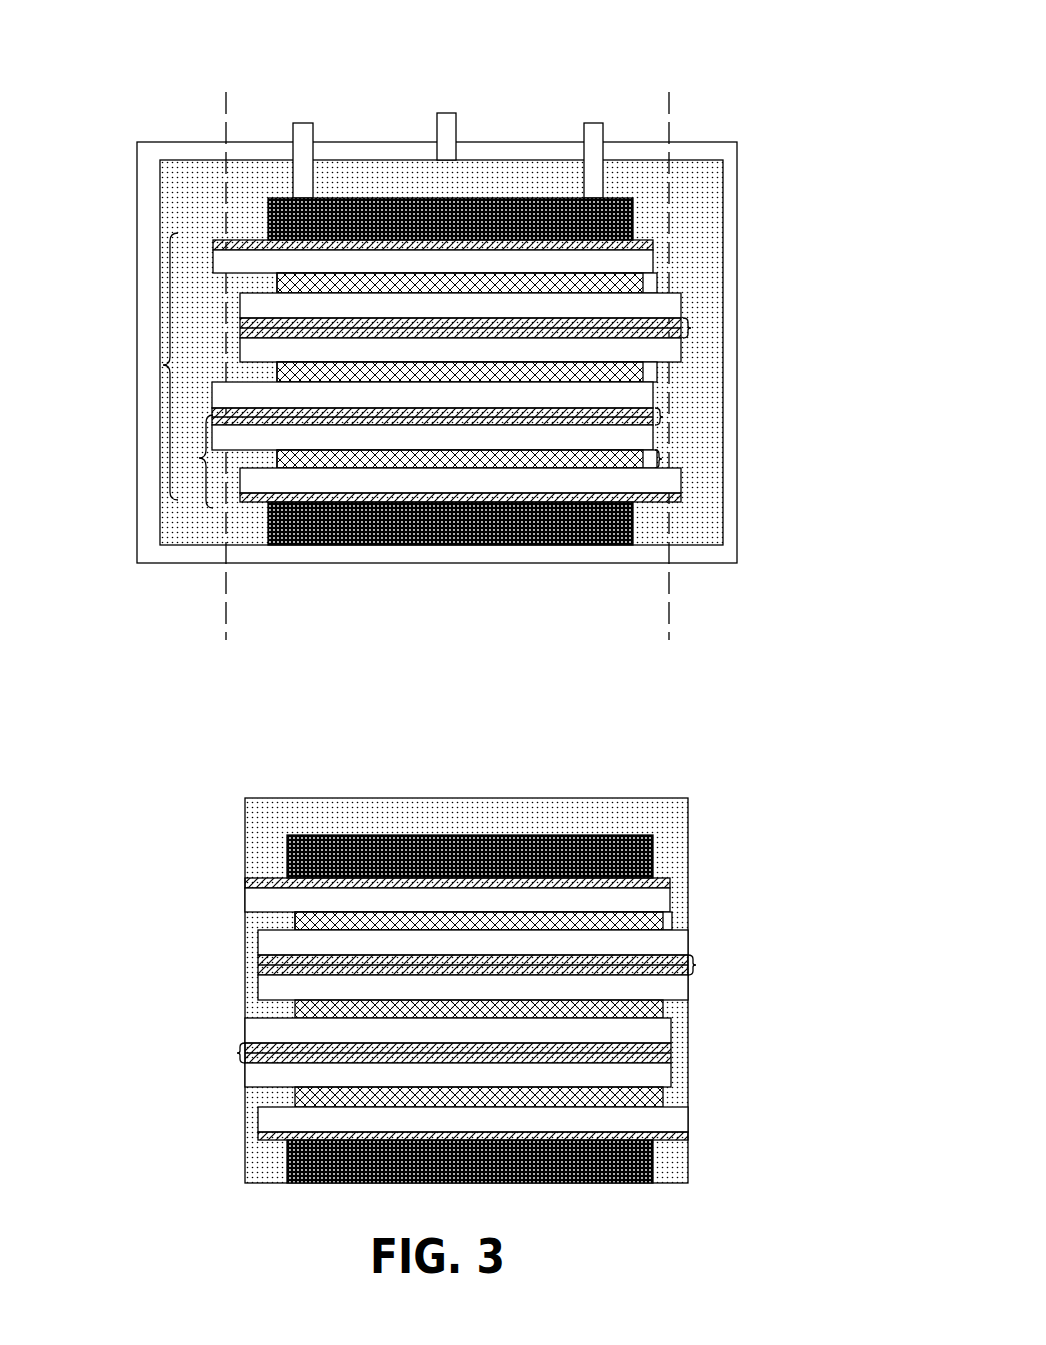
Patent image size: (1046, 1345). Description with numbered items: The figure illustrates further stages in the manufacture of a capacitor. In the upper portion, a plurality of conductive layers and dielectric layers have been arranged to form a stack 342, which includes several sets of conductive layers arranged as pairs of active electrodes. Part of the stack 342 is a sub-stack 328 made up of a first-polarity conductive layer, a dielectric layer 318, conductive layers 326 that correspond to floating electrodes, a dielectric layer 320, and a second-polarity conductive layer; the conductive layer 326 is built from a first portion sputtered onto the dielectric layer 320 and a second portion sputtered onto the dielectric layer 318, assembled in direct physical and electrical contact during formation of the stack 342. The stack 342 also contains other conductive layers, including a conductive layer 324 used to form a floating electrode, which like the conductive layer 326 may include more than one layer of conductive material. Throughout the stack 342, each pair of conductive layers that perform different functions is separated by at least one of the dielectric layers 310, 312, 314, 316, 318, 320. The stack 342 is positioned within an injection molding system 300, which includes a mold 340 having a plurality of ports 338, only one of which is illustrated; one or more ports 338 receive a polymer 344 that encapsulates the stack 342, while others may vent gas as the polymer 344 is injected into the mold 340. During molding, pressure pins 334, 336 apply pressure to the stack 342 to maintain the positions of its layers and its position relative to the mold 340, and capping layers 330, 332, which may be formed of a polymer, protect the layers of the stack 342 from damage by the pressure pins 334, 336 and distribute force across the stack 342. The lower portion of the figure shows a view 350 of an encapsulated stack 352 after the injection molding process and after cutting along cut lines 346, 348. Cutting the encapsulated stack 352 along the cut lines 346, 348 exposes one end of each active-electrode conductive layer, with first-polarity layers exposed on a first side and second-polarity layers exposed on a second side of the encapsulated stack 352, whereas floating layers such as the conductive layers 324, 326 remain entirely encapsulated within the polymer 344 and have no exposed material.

The injection molding system 300 is at (722, 44).
The dielectric layer 310 is at (326, 272).
The dielectric layer 312 is at (326, 315).
The dielectric layer 314 is at (326, 361).
The dielectric layer 316 is at (326, 404).
The dielectric layer 318 is at (326, 448).
The dielectric layer 320 is at (326, 488).
The conductive layer 324 is at (660, 370).
The conductive layers 326 is at (661, 458).
The sub-stack 328 is at (199, 458).
The capping layer 330 is at (326, 230).
The capping layer 332 is at (326, 532).
The pressure pin 334 is at (313, 123).
The pressure pin 336 is at (603, 123).
The port 338 is at (456, 113).
The mold 340 is at (137, 167).
The stack 342 is at (163, 362).
The polymer 344 is at (176, 198).
The cut line 346 is at (226, 122).
The cut line 348 is at (669, 110).
The view 350 is at (762, 725).
The encapsulated stack 352 is at (268, 798).